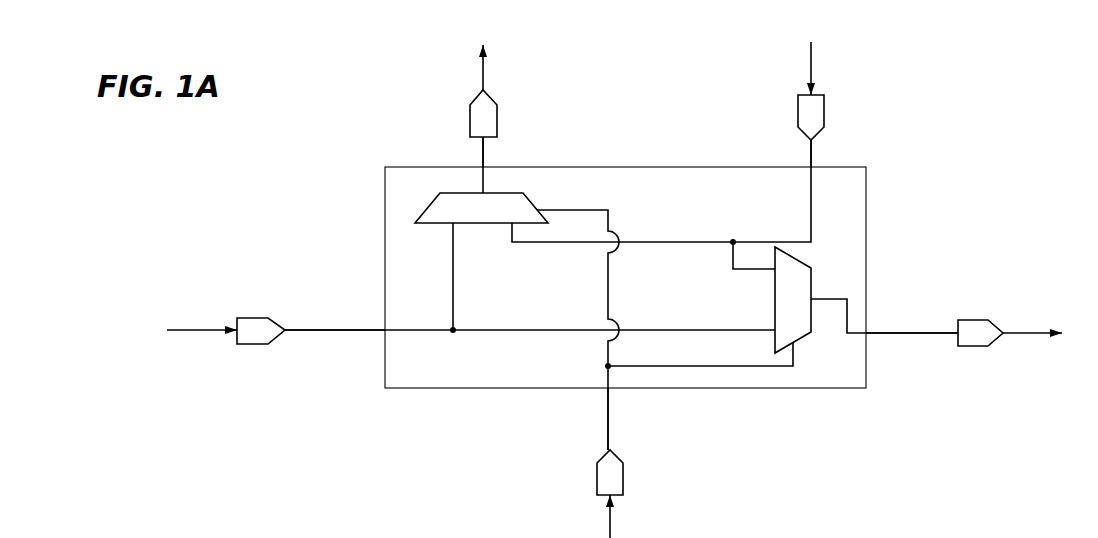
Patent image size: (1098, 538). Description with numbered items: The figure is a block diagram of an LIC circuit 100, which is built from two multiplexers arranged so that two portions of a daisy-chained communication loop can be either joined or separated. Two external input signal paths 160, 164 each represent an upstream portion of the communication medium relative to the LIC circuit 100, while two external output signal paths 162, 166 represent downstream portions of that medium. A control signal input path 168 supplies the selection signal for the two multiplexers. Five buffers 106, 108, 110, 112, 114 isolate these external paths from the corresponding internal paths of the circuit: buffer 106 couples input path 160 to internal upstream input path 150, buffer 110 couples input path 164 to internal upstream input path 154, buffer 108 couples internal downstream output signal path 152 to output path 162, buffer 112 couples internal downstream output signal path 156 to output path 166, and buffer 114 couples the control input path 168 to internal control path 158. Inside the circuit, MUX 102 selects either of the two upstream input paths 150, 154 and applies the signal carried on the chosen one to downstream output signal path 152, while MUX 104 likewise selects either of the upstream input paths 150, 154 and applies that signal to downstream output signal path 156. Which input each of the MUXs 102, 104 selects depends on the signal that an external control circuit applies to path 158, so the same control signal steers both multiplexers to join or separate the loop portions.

The LIC circuit 100 is at (990, 120).
The MUX 102 is at (527, 193).
The MUX 104 is at (812, 280).
The buffer 106 is at (250, 347).
The buffer 108 is at (498, 108).
The buffer 110 is at (825, 108).
The buffer 112 is at (972, 348).
The buffer 114 is at (595, 467).
The communication loop upstream input path 150 is at (328, 329).
The downstream output signal path 152 is at (483, 155).
The communication loop upstream input path 154 is at (806, 155).
The downstream output signal path 156 is at (918, 330).
The control signal path 158 is at (612, 410).
The input signal path 160 is at (192, 328).
The output signal path 162 is at (483, 70).
The input signal path 164 is at (808, 52).
The output signal path 166 is at (1033, 330).
The control signal input path 168 is at (612, 523).